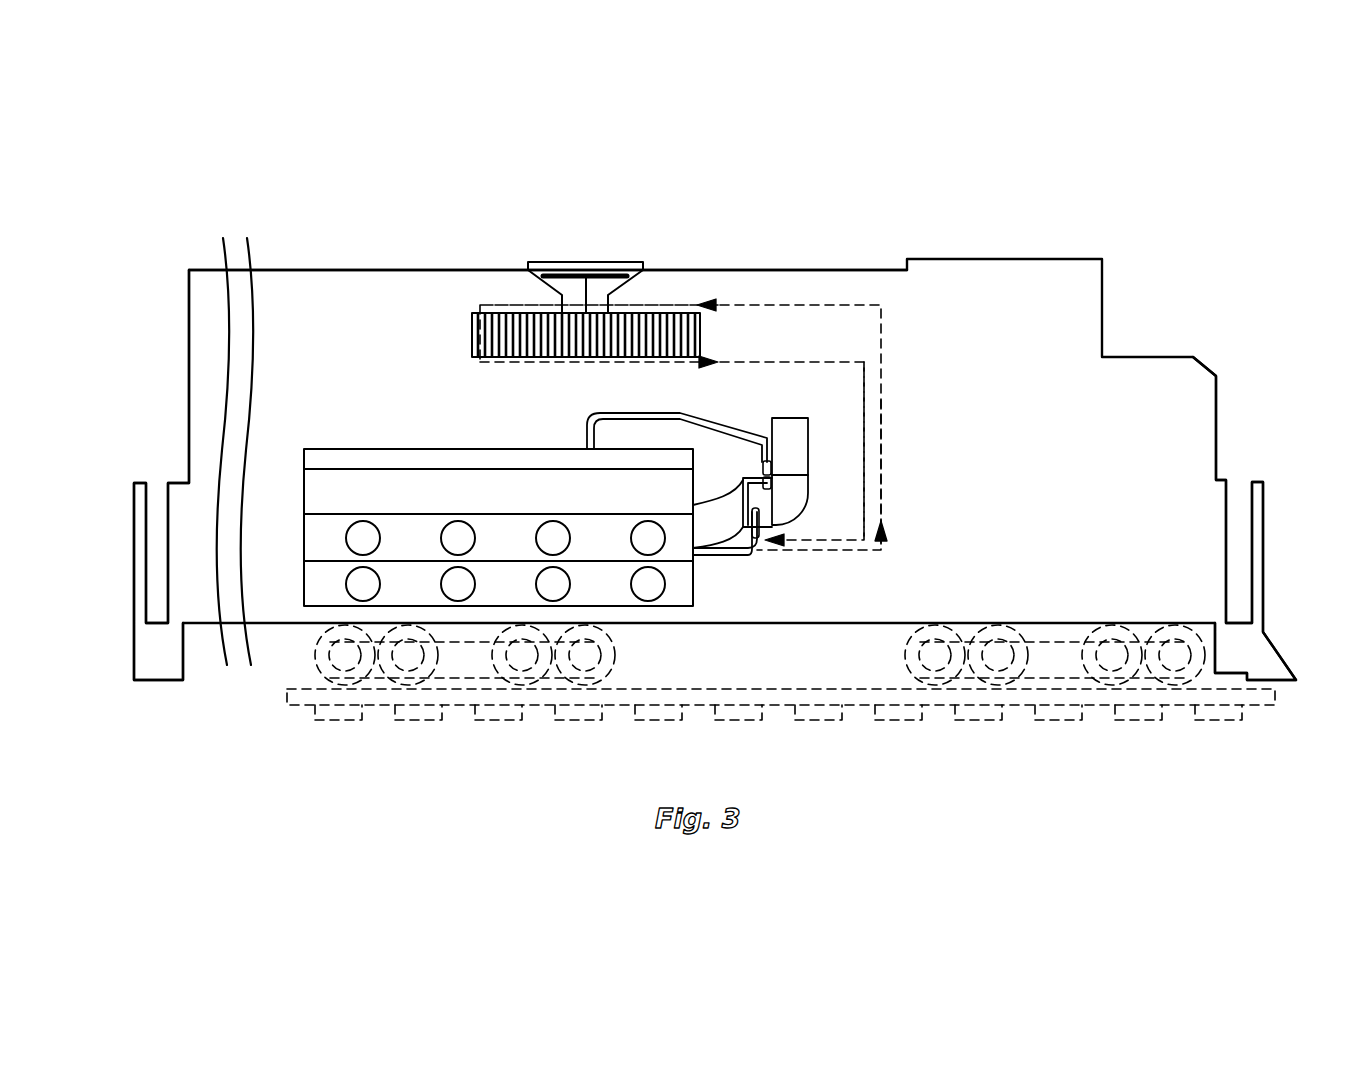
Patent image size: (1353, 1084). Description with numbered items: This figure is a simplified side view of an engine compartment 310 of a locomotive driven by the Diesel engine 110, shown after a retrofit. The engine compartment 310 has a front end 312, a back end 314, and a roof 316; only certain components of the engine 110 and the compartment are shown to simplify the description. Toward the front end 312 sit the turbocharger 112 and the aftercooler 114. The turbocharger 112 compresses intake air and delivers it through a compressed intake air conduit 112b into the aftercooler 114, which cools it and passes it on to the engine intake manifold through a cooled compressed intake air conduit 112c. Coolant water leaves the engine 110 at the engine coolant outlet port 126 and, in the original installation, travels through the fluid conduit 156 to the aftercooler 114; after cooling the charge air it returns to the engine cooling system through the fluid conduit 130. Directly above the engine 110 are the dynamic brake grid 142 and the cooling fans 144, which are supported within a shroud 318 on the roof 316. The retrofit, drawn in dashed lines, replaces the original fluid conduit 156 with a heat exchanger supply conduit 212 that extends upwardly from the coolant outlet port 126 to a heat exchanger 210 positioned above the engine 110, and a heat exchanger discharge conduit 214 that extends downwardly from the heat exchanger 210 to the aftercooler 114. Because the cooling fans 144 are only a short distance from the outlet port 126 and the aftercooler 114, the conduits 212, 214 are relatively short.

The engine compartment 310 is at (1195, 298).
The front end 312 is at (1232, 411).
The back end 314 is at (183, 377).
The roof 316 is at (350, 268).
The shroud 318 is at (555, 264).
The cooling fans 144 is at (597, 270).
The dynamic brake grid 142 is at (518, 358).
The heat exchanger 210 is at (657, 302).
The heat exchanger supply conduit 212 is at (882, 488).
The heat exchanger discharge conduit 214 is at (866, 430).
The fluid conduit 130 is at (683, 412).
The turbocharger 112 is at (773, 463).
The compressed intake air conduit 112b is at (798, 490).
The cooled compressed intake air conduit 112c is at (722, 508).
The aftercooler 114 is at (760, 510).
The fluid conduit 156 is at (723, 557).
The second engine coolant outlet port 126 is at (702, 561).
The Diesel engine 110 is at (445, 607).